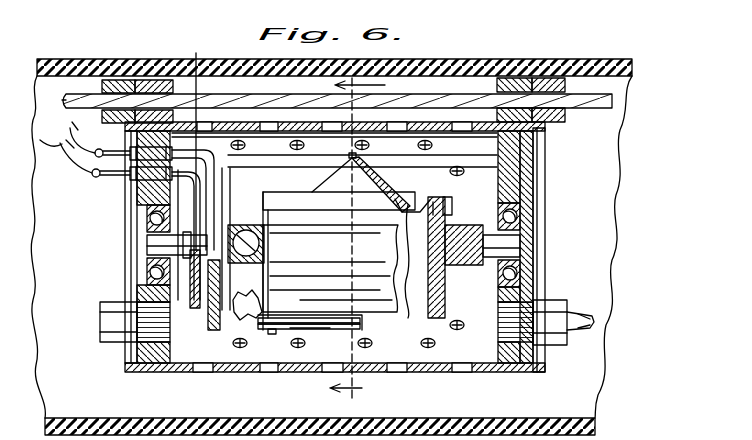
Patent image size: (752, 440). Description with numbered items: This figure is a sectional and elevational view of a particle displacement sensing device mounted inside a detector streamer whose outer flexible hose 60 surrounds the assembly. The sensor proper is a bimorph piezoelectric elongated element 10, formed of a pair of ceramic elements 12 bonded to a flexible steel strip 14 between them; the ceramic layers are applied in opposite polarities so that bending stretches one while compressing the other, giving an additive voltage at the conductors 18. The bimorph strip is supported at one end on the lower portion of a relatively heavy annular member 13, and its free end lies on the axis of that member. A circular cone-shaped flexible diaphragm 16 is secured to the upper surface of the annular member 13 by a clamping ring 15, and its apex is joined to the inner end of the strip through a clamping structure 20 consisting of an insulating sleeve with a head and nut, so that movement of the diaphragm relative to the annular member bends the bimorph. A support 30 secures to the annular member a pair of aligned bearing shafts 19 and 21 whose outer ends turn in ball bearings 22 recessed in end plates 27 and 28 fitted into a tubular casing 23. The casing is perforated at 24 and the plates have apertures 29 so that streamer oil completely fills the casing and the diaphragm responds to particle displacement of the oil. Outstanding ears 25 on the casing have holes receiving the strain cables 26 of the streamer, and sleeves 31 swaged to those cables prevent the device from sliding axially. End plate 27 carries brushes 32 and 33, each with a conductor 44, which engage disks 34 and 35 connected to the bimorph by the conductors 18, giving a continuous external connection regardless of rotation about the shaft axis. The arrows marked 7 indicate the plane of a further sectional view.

The section line 7- 7 is at (365, 238).
The bimorph piezoelectric elongated element 10 is at (335, 336).
The ceramic elements 12 is at (303, 318).
The annular member 13 is at (382, 299).
The flexible steel strip 14 is at (362, 326).
The clamping ring 15 is at (438, 197).
The flexible diaphragm 16 is at (334, 173).
The conductors 18 is at (238, 318).
The bearing shaft 19 is at (507, 244).
The clamping structure 20 is at (358, 318).
The bearing shaft 21 is at (160, 246).
The ball bearings 22 is at (148, 218).
The tubular casing 23 is at (506, 373).
The perforations 24 is at (268, 372).
The outstanding ears 25 is at (151, 80).
The strain cables 26 is at (614, 102).
The end plate 27 is at (156, 346).
The end plate 28 is at (546, 150).
The apertures 29 is at (154, 324).
The support 30 is at (245, 215).
The sleeves 31 is at (116, 80).
The brush 32 is at (187, 186).
The brush 33 is at (207, 144).
The disk 34 is at (193, 292).
The disk 35 is at (222, 312).
The conductors 44 is at (40, 140).
The flexible hose 60 is at (486, 59).